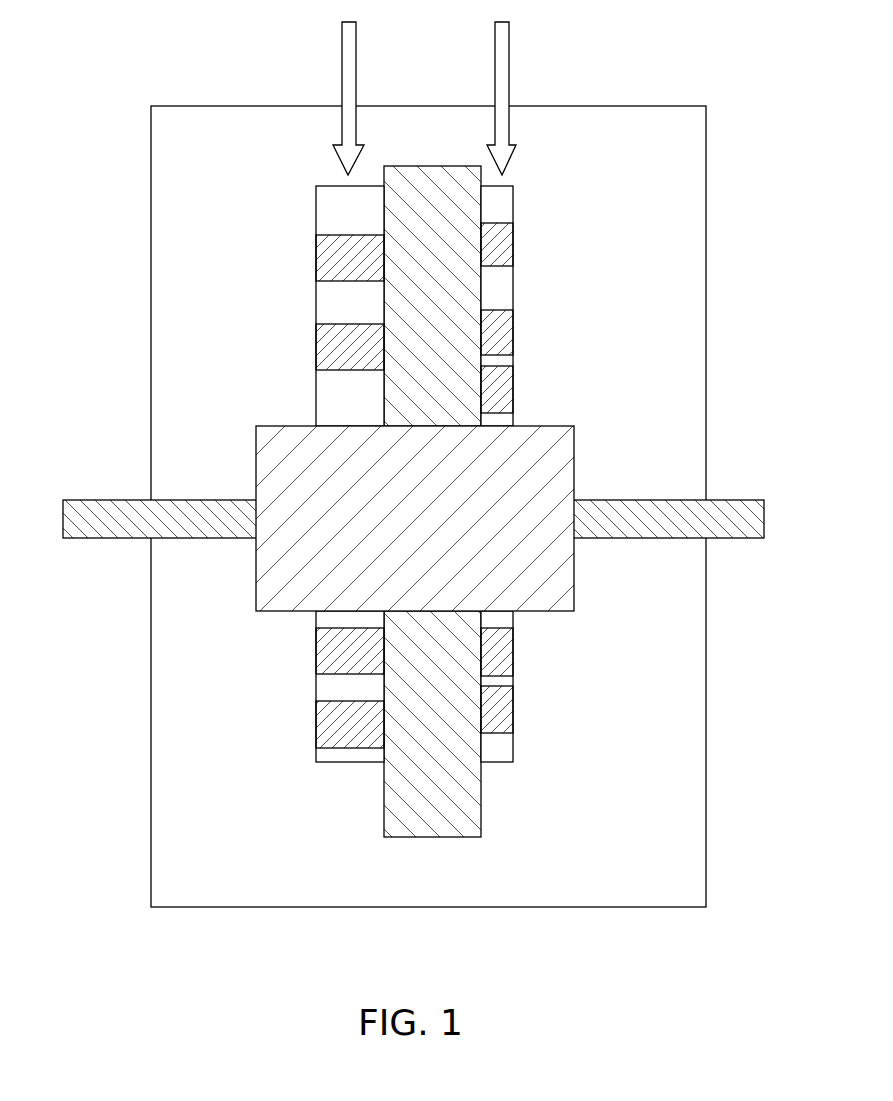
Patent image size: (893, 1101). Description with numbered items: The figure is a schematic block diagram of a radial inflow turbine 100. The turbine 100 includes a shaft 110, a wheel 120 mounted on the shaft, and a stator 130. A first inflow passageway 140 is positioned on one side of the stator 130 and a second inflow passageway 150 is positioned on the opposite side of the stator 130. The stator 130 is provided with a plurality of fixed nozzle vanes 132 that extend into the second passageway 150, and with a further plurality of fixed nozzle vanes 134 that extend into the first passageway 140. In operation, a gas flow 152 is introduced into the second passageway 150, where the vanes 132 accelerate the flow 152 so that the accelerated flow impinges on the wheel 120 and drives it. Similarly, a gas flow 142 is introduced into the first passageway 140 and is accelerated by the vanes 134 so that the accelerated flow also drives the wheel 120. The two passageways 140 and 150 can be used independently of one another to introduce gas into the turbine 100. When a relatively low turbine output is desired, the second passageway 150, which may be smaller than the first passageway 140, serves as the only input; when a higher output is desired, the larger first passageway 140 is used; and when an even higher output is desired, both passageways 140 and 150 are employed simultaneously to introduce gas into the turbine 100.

The radial inflow turbine 100 is at (135, 160).
The shaft 110 is at (741, 497).
The wheel 120 is at (256, 433).
The stator 130 is at (384, 803).
The fixed nozzle vanes 132 is at (508, 245).
The fixed nozzle vanes 134 is at (320, 258).
The first inflow passageway 140 is at (316, 198).
The gas flow 142 is at (341, 67).
The second inflow passageway 150 is at (513, 205).
The gas flow 152 is at (510, 67).